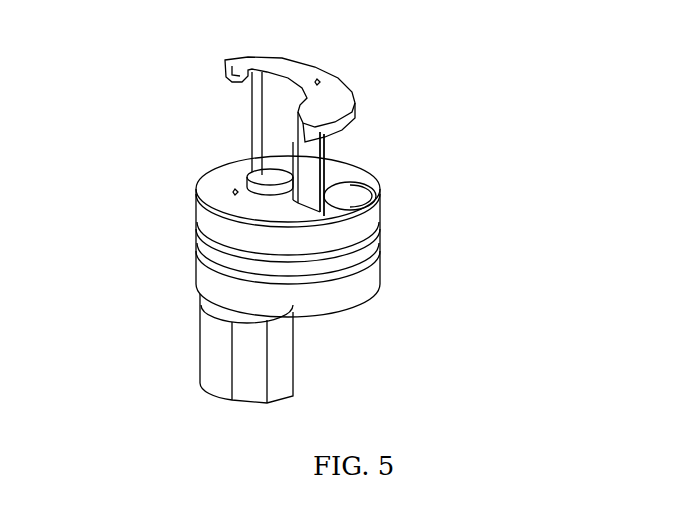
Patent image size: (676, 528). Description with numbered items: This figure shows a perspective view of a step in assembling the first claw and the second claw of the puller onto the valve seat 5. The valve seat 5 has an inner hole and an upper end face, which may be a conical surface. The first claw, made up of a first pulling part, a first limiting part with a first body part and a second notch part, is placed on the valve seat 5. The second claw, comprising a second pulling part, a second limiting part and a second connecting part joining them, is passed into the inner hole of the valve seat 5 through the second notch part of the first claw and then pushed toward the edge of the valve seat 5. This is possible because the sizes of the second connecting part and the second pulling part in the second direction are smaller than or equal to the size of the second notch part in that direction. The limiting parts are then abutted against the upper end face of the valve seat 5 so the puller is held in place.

The valve seat 5 is at (372, 226).